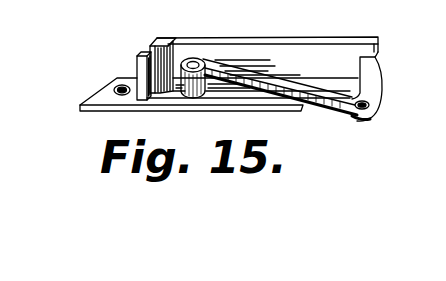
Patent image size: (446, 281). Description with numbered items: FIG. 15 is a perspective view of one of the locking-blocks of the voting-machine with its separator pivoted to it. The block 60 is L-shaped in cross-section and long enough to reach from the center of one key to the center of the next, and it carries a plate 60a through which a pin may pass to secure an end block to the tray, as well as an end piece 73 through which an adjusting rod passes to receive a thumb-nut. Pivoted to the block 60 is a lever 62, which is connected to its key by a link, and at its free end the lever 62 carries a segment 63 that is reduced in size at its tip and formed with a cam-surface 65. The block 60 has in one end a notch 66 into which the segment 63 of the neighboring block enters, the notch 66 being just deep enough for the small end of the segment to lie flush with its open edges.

The block 60 is at (273, 43).
The plate 60a is at (100, 97).
The lever 62 is at (311, 96).
The segment 63 is at (370, 90).
The cam-surface 65 is at (383, 70).
The notch 66 is at (380, 53).
The end piece 73 is at (143, 73).